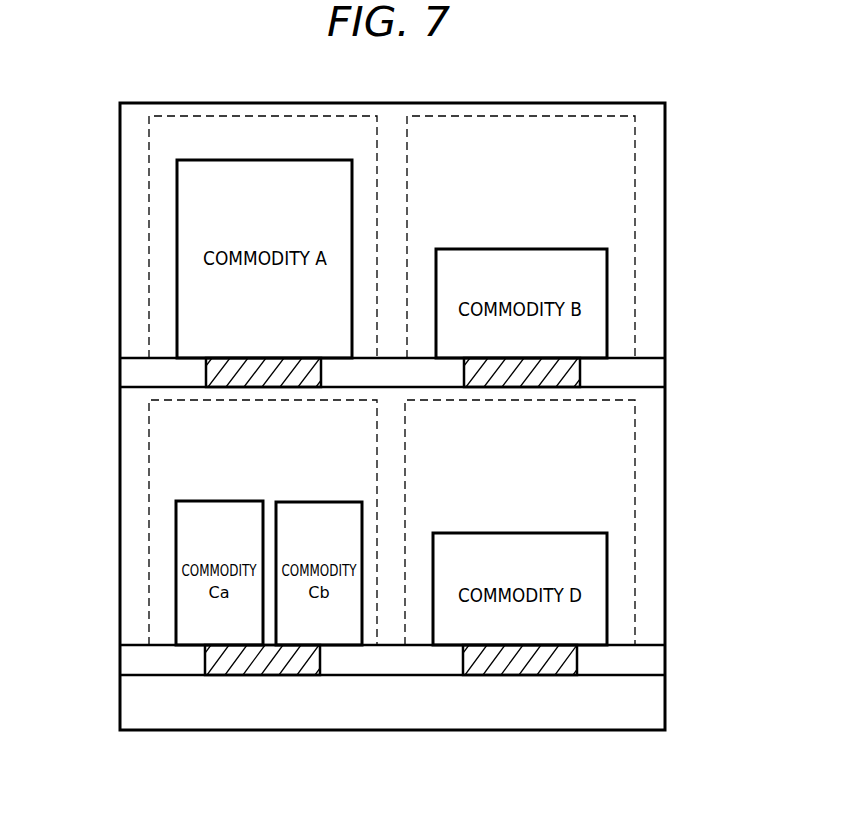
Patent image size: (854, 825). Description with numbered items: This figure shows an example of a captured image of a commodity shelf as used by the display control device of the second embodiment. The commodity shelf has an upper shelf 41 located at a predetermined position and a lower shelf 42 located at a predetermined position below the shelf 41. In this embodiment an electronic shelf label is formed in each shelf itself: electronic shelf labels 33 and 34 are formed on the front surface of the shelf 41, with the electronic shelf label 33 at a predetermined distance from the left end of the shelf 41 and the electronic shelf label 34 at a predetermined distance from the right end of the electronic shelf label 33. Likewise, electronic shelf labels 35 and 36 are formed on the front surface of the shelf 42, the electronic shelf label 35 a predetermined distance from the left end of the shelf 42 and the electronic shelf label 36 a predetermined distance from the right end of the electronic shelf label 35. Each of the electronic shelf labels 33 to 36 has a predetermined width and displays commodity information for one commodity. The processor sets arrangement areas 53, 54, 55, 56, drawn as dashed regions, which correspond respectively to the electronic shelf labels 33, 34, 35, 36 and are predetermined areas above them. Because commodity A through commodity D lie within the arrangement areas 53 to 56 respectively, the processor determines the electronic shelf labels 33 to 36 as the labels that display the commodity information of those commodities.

The electronic shelf label 33 is at (235, 358).
The electronic shelf label 34 is at (561, 358).
The electronic shelf label 35 is at (266, 675).
The electronic shelf label 36 is at (531, 675).
The shelf 41 is at (120, 372).
The shelf 42 is at (120, 660).
The arrangement area 53 is at (147, 149).
The arrangement area 54 is at (635, 150).
The arrangement area 55 is at (149, 430).
The arrangement area 56 is at (635, 433).